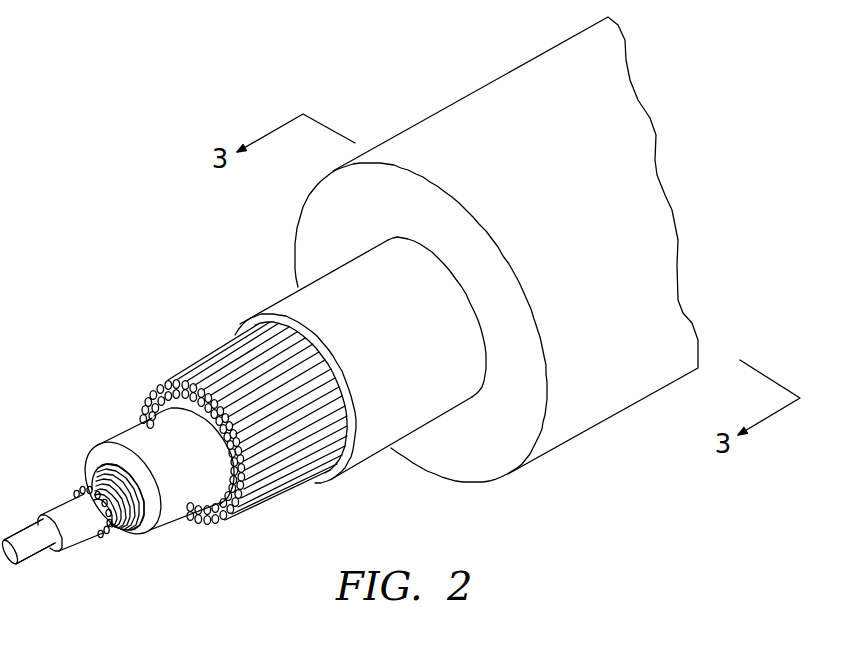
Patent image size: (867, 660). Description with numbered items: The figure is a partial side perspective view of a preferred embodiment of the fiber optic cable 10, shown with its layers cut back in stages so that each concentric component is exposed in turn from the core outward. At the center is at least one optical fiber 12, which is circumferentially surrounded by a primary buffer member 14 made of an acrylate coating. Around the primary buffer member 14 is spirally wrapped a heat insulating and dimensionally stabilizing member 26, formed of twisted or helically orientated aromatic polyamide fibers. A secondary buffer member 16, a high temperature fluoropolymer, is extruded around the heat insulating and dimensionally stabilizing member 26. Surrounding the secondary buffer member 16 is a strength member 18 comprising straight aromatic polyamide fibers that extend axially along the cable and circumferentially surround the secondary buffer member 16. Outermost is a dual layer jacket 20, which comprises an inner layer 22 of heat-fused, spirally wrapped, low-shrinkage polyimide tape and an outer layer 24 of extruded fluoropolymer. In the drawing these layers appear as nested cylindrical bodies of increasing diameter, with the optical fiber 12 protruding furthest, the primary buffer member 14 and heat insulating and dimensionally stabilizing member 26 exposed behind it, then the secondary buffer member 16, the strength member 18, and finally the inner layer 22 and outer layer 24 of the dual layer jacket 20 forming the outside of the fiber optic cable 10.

The fiber optic cable 10 is at (127, 237).
The optical fiber 12 is at (33, 553).
The primary buffer member 14 is at (85, 527).
The secondary buffer member 16 is at (173, 500).
The strength member 18 is at (277, 477).
The dual layer jacket 20 is at (502, 488).
The inner layer 22 is at (366, 359).
The outer layer 24 is at (584, 267).
The heat insulating and dimensionally stabilizing member 26 is at (127, 513).